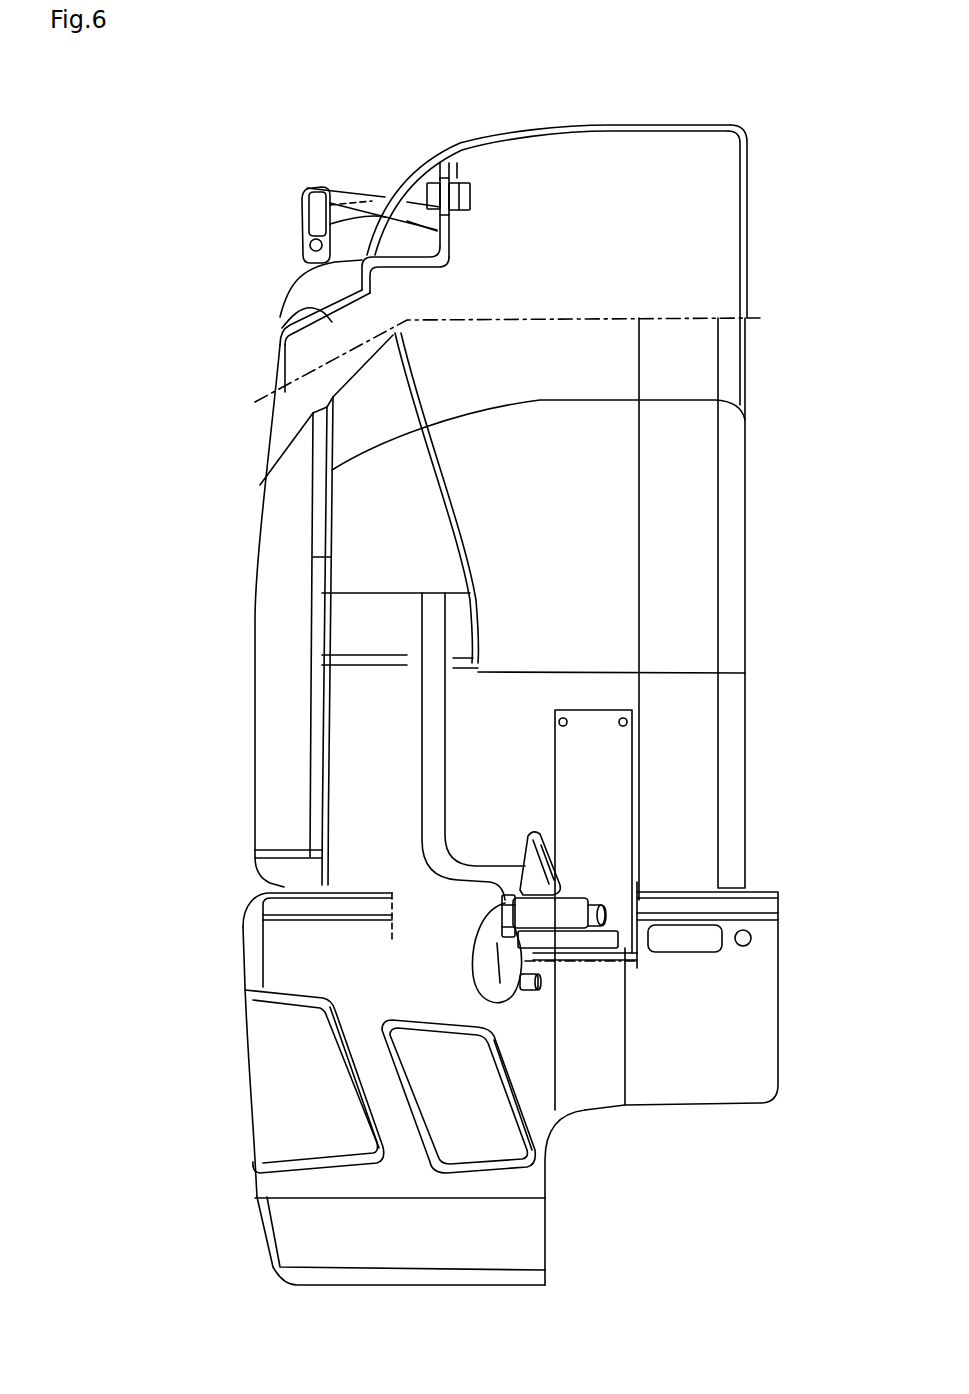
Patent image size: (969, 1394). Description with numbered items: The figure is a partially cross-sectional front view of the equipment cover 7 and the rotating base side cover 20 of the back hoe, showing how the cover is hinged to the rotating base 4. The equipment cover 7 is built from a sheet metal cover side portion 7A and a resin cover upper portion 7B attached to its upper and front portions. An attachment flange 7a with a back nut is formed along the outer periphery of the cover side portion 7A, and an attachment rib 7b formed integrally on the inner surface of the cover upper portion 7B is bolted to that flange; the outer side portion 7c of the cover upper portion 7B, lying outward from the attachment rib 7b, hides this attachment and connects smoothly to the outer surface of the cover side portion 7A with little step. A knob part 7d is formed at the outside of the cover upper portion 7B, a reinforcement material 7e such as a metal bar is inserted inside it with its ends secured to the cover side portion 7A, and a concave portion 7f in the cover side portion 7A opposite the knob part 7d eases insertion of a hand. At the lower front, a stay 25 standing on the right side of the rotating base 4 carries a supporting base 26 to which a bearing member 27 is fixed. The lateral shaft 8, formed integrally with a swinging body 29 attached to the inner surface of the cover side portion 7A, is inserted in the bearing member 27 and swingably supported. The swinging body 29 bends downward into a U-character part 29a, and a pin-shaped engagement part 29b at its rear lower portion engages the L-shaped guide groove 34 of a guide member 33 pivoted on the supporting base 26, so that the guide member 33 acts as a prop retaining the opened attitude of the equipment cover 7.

The equipment cover 7 is at (218, 627).
The cover side portion 7A is at (362, 297).
The cover upper portion 7B is at (672, 133).
The attachment flange 7a is at (445, 243).
The attachment rib 7b is at (467, 162).
The outer side portion 7c is at (403, 180).
The knob part 7d is at (315, 233).
The reinforcement material 7e is at (313, 247).
The concave portion 7f is at (282, 328).
The rotating base 4 is at (210, 951).
The lateral shaft 8 is at (603, 917).
The rotating base side cover 20 is at (290, 1187).
The stay 25 is at (580, 960).
The supporting base 26 is at (700, 826).
The bearing member 27 is at (575, 898).
The swinging body 29 is at (440, 632).
The U-character part 29a is at (490, 997).
The engagement part 29b is at (497, 950).
The guide member 33 is at (528, 862).
The guide groove 34 is at (532, 873).